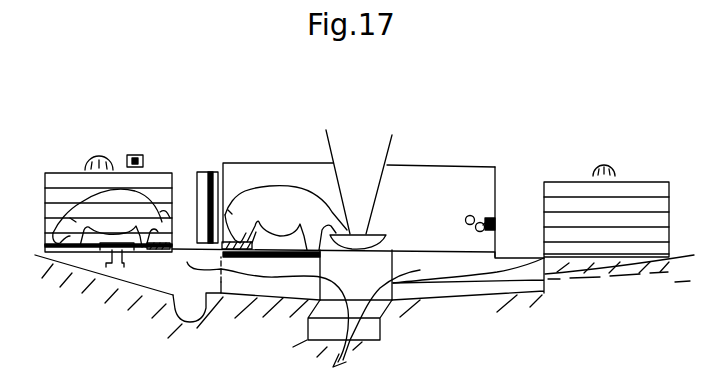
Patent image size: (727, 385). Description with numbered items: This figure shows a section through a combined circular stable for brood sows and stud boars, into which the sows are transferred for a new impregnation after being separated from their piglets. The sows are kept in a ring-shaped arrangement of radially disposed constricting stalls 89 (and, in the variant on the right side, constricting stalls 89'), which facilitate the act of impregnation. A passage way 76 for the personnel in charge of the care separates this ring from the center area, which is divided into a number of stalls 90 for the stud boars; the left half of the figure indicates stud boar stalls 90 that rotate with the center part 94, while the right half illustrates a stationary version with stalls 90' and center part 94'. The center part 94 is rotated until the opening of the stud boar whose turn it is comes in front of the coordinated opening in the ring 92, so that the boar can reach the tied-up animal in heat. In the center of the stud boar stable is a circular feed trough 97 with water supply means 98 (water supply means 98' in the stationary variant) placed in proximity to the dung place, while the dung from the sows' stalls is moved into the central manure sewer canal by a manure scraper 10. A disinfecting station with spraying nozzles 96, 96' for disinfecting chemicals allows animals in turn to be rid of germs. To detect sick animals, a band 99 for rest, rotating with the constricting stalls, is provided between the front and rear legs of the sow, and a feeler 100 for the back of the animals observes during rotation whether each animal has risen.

The constricting stall 89 is at (104, 172).
The spraying nozzle 96 is at (89, 119).
The feeler 100 is at (117, 203).
The passage way 76 is at (183, 190).
The manure scraper 10 is at (160, 253).
The band for rest 99 is at (104, 265).
The ring 92 is at (208, 172).
The water supply means 98 is at (237, 173).
The center part 94 is at (285, 159).
The stud boar stall 90 is at (338, 169).
The circular feed trough 97 is at (360, 153).
The center part 94' is at (449, 128).
The stud boar stall 90' is at (469, 153).
The water supply means 98' is at (508, 148).
The constricting stall 89' is at (606, 174).
The spraying nozzle 96' is at (630, 134).